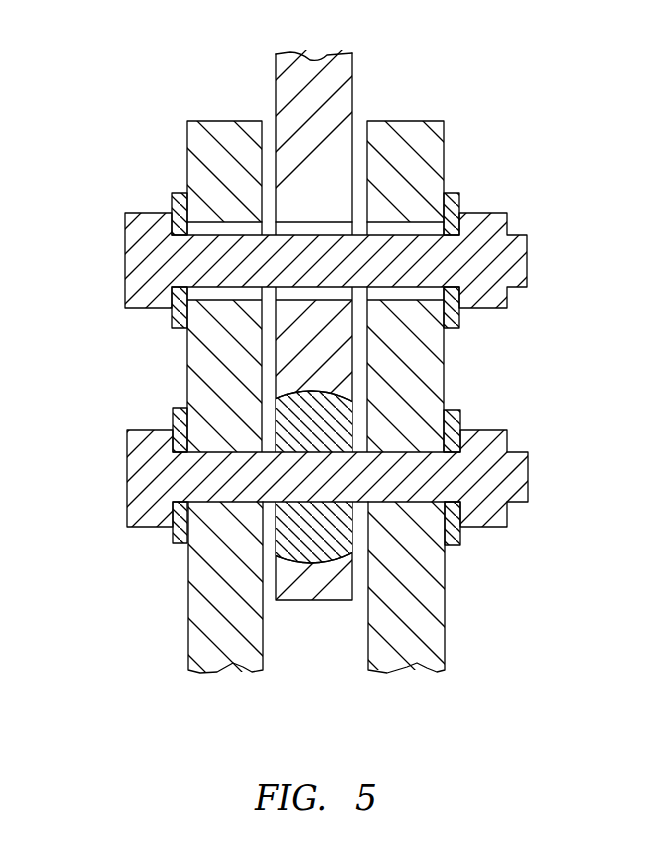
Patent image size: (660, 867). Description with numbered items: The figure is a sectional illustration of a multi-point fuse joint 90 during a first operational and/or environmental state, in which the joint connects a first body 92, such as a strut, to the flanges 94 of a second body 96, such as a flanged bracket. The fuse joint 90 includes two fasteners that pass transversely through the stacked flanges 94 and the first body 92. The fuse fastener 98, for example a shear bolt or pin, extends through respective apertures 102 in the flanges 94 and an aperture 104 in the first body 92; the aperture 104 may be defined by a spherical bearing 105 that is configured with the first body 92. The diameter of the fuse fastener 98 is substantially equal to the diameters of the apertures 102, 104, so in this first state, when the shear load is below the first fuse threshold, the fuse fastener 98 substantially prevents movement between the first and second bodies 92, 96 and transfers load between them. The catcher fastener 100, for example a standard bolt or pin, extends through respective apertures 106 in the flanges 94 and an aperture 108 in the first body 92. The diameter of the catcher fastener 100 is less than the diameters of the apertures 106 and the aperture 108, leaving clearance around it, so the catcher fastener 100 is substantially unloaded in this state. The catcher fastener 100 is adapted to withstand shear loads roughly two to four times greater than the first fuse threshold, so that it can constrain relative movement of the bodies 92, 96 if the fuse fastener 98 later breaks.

The multi-point fuse joint 90 is at (330, 433).
The first body 92 is at (322, 53).
The flanges 94 is at (217, 672).
The second body 96 is at (330, 433).
The fuse fastener 98 is at (529, 468).
The catcher fastener 100 is at (528, 262).
The apertures 102 is at (217, 505).
The aperture 104 is at (362, 508).
The spherical bearing 105 is at (355, 430).
The apertures 106 is at (207, 222).
The aperture 108 is at (316, 222).